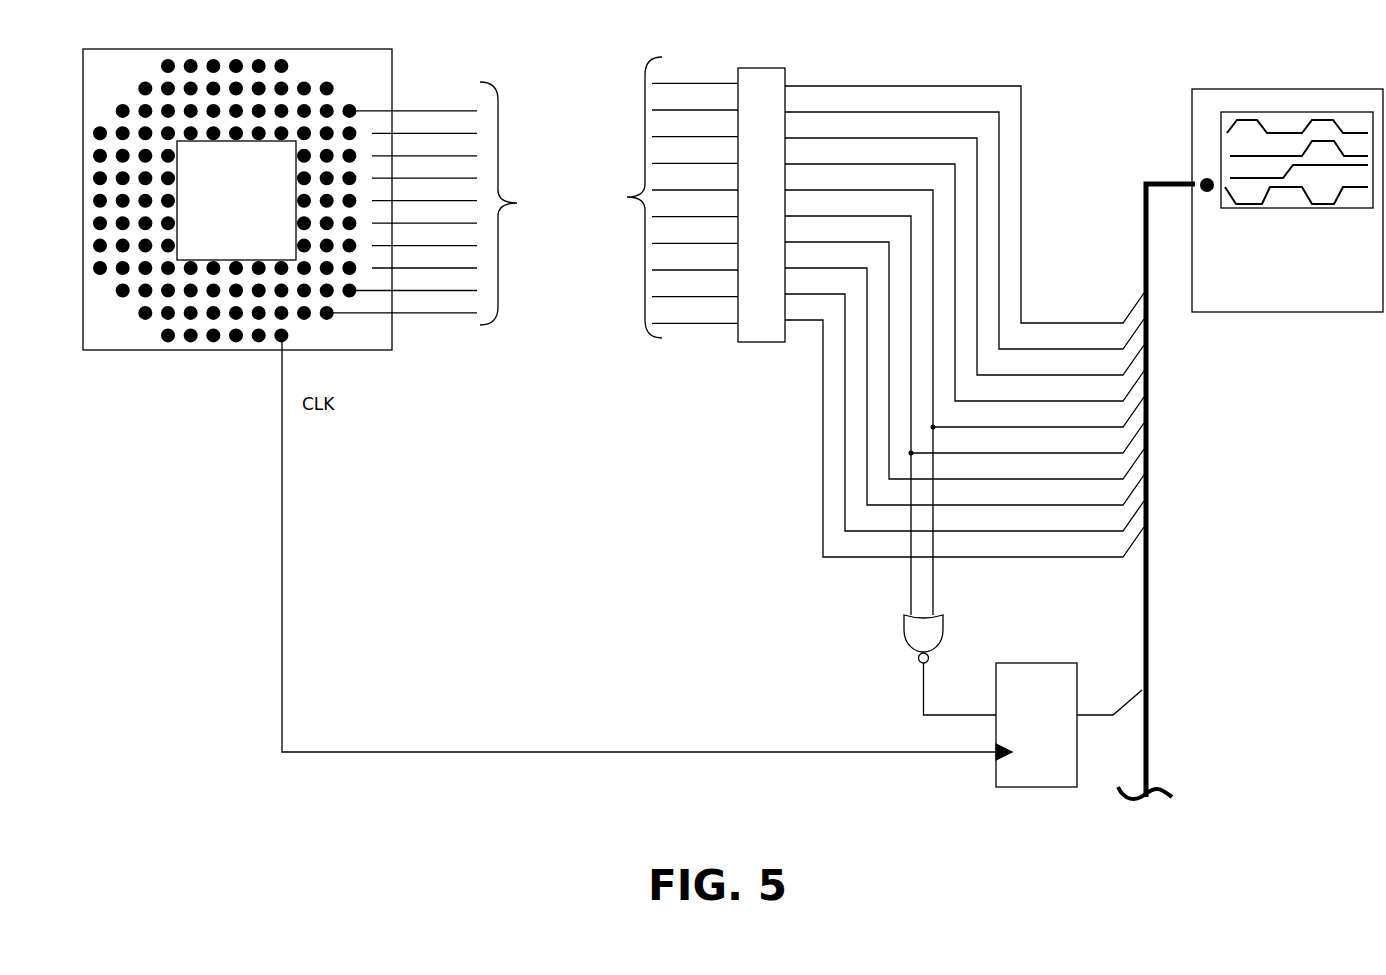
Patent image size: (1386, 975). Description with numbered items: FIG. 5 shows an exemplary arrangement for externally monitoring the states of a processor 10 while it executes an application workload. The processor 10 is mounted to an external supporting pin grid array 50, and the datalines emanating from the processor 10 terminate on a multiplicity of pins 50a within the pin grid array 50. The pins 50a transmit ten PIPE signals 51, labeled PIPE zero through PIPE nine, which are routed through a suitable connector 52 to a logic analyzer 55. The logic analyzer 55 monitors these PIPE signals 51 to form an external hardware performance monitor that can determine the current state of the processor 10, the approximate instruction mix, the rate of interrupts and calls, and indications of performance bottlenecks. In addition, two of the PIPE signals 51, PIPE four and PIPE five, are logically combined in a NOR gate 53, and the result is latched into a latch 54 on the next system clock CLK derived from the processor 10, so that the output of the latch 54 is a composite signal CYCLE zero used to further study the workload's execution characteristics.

The processor 10 is at (226, 221).
The pin grid array 50 is at (252, 360).
The pins 50a is at (141, 316).
The PIPE signals 51 is at (572, 205).
The connector 52 is at (757, 347).
The NOR gate 53 is at (902, 640).
The latch 54 is at (1080, 770).
The logic analyzer 55 is at (1253, 87).